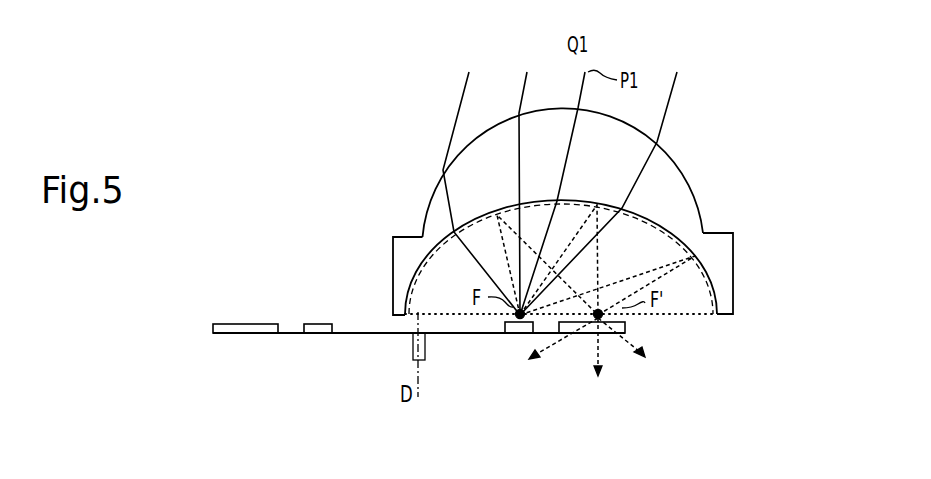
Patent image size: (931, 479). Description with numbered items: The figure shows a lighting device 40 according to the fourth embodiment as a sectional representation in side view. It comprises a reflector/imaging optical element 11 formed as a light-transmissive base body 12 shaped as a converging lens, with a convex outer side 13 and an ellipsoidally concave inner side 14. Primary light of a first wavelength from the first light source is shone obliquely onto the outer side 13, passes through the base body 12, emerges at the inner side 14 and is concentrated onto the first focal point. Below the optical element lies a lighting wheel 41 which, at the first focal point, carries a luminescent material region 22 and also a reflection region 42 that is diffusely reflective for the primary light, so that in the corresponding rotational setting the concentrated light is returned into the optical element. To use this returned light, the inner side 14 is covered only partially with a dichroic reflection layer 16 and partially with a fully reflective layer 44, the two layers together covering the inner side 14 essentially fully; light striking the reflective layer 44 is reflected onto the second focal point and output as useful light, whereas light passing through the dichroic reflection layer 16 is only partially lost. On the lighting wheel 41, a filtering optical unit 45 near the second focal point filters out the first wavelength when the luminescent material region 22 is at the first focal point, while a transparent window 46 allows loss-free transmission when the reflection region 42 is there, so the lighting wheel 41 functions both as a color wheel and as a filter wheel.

The lighting device 40 is at (725, 112).
The outer side 13 is at (678, 163).
The inner side 14 is at (663, 242).
The base body 12 is at (404, 250).
The reflector/imaging optical element 11 is at (428, 212).
The dichroic reflection layer 16 is at (477, 227).
The reflective layer 44 is at (713, 297).
The lighting wheel 41 is at (368, 345).
The filtering optical unit 45 is at (465, 336).
The transparent window 46 is at (250, 323).
The luminescent material region 22 is at (418, 328).
The reflection region 42 is at (320, 323).